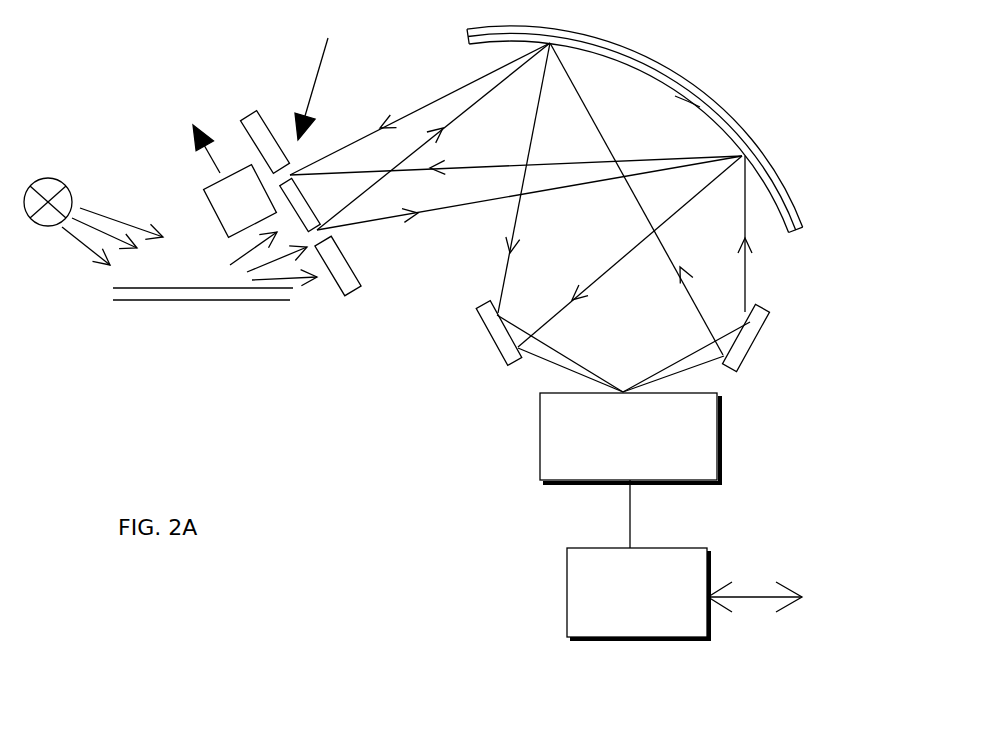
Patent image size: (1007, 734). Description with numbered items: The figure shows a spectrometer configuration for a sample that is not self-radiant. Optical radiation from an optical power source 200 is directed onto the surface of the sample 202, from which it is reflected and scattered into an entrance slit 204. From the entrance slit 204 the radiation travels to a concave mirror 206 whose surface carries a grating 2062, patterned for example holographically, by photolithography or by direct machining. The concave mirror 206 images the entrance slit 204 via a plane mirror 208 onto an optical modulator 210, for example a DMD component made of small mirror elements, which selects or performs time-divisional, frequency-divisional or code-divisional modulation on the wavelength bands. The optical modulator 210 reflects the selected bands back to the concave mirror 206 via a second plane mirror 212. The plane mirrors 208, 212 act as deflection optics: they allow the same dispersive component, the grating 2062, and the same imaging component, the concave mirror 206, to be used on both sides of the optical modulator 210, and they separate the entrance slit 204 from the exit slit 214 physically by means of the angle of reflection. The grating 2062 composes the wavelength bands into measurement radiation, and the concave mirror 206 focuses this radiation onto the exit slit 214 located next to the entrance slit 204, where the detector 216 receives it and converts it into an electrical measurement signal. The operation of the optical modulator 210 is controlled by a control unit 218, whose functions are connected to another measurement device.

The optical power source 200 is at (50, 179).
The sample 202 is at (132, 301).
The entrance slit 204 is at (348, 240).
The concave mirror 206 is at (603, 38).
The grating 2062 is at (688, 101).
The plane mirror 208 is at (485, 328).
The optical modulator 210 is at (719, 463).
The plane mirror 212 is at (757, 337).
The exit slit 214 is at (322, 76).
The detector 216 is at (213, 181).
The control unit 218 is at (567, 562).